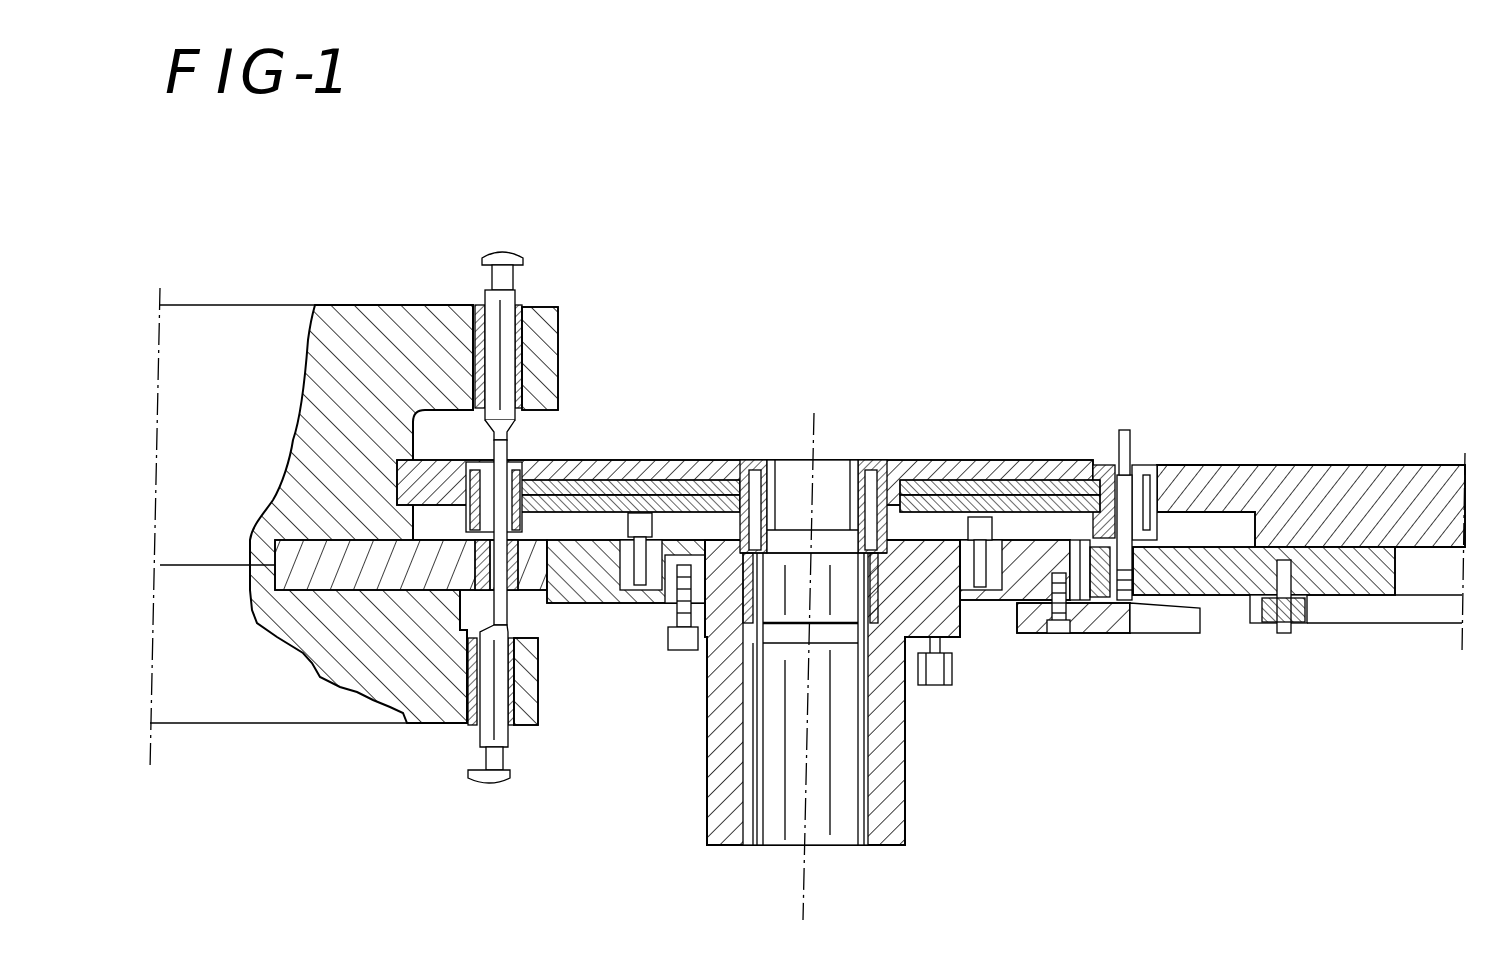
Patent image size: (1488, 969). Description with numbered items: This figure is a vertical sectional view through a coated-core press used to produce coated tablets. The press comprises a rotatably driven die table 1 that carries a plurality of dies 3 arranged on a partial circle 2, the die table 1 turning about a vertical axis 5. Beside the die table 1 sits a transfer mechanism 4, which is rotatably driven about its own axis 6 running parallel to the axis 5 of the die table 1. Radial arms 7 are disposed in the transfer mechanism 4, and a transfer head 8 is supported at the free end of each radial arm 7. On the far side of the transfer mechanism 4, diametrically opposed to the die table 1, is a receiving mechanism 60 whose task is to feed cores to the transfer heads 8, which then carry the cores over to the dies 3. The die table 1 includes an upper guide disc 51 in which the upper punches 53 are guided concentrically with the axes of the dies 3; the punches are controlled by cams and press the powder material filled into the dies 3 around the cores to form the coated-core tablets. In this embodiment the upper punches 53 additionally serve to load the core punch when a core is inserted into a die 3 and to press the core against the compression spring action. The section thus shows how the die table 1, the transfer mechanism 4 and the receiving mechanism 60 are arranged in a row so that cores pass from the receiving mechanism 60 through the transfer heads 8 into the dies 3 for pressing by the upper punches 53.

The die table 1 is at (383, 300).
The partial circle 2 is at (478, 755).
The die 3 is at (518, 568).
The transfer mechanism 4 is at (880, 443).
The axis of the die table 5 is at (147, 714).
The axis of the transfer mechanism 6 is at (806, 868).
The radial arm 7 is at (610, 478).
The transfer head 8 is at (547, 450).
The upper guide disc 51 is at (545, 345).
The upper punch 53 is at (517, 282).
The receiving mechanism 60 is at (1287, 447).